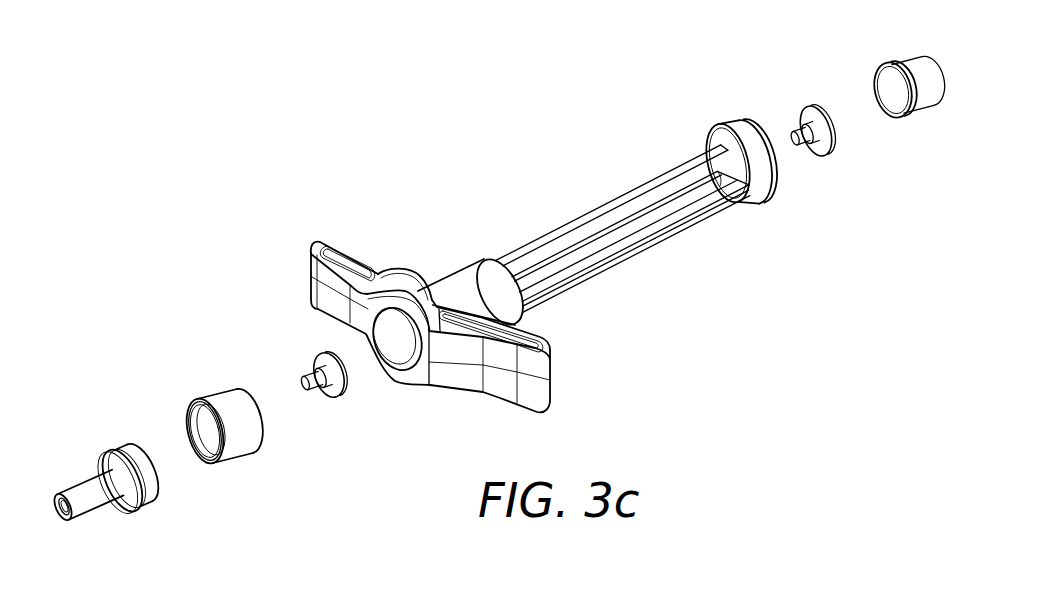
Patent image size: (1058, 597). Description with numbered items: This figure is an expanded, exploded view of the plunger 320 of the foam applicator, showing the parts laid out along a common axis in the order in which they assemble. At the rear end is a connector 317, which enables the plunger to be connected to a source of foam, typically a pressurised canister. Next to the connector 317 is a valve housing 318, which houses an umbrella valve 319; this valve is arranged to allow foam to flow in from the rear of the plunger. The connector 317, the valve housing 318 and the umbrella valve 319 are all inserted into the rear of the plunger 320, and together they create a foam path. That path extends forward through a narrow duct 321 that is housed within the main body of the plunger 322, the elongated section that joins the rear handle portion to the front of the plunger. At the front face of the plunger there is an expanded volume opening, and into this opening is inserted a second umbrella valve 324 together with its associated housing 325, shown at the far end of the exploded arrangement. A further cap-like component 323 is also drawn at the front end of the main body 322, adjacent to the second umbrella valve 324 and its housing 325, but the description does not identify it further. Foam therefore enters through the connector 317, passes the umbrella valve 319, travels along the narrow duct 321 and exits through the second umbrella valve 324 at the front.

The connector 317 is at (100, 503).
The valve housing 318 is at (243, 442).
The umbrella valve 319 is at (318, 359).
The plunger 320 is at (405, 357).
The narrow duct 321 is at (623, 228).
The main body of the plunger 322 is at (598, 275).
The cap 323 is at (752, 122).
The second umbrella valve 324 is at (836, 156).
The housing 325 is at (898, 64).